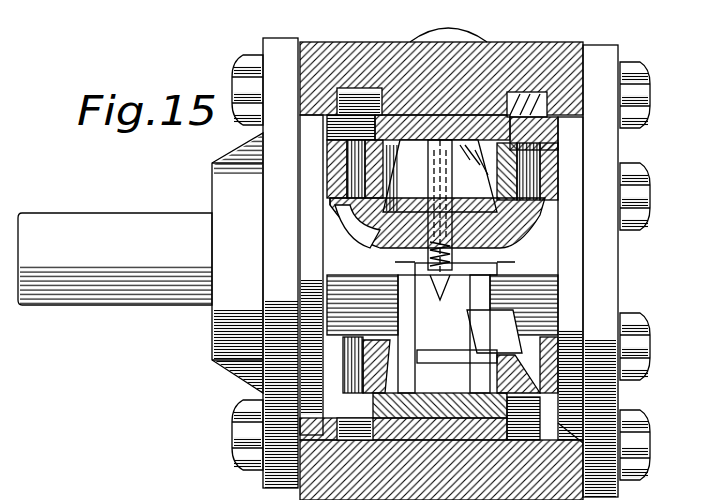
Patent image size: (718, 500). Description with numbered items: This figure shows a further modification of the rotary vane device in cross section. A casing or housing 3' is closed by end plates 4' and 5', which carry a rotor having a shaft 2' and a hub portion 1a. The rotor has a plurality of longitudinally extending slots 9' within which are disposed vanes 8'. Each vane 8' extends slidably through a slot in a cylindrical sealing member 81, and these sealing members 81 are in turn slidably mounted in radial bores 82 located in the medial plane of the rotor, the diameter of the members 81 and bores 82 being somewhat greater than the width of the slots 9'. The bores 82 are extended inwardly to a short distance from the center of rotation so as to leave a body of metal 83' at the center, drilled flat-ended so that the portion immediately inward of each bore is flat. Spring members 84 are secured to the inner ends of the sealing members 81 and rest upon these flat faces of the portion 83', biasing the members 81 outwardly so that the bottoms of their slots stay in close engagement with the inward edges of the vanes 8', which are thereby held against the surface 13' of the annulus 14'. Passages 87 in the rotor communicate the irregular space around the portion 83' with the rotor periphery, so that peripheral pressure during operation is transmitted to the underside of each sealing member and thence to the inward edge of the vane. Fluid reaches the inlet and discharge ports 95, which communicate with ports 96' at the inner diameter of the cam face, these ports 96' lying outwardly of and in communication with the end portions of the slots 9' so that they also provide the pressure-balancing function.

The shaft 2' is at (115, 242).
The end plate 4' is at (242, 263).
The casing 3' is at (596, 255).
The annulus 14' is at (441, 71).
The surface of the annulus 13' is at (442, 82).
The end plate 5' is at (617, 278).
The inlet and discharge ports 95 is at (532, 176).
The slots 9' is at (540, 177).
The vanes 8' is at (452, 246).
The cylindrical sealing members 81 is at (493, 193).
The spring members 84 is at (500, 248).
The body of metal at the center portion of the rotor 83' is at (353, 241).
The radial bores 82 is at (520, 256).
The hub portion of the rotor 1a is at (323, 280).
The passages 87 is at (520, 300).
The ports 96' is at (358, 376).